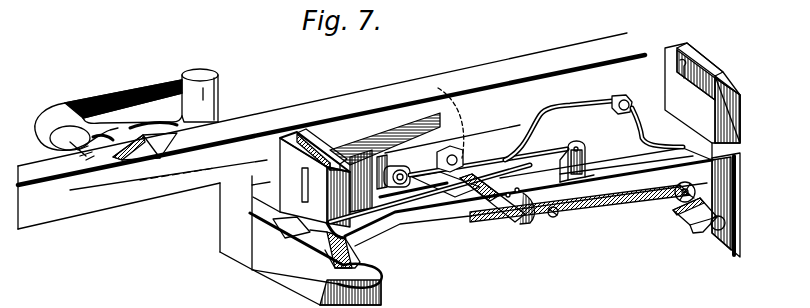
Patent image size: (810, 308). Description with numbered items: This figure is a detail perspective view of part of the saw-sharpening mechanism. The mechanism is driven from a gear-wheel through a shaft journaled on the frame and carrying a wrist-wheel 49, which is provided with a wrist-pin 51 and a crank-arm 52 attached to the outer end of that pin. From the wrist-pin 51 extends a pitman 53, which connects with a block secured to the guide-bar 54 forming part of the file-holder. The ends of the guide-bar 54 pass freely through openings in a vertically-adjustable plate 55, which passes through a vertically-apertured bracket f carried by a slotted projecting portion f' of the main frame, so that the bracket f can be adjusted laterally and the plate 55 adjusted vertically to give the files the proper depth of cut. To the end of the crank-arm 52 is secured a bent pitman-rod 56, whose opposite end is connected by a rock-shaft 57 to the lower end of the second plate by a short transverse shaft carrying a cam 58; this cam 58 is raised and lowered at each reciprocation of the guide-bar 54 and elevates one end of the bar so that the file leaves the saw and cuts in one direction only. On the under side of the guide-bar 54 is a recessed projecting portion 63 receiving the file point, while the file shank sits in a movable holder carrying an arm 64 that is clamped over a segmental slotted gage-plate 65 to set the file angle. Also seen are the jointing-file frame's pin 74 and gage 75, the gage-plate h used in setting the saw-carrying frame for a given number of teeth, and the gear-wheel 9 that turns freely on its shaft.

The gear-wheel 9 is at (331, 131).
The pin 74 is at (68, 150).
The gage 75 is at (150, 160).
The bracket f is at (272, 192).
The supporting part f' is at (301, 259).
The vertically-adjustable plate 55 is at (303, 136).
The crank-arm 52 is at (400, 166).
The wrist-pin 51 is at (447, 150).
The wrist-wheel 49 is at (455, 141).
The bent pitman-rod 56 is at (553, 113).
The rock-shaft 57 is at (636, 140).
The pitman 53 is at (572, 146).
The guide-bar 54 is at (430, 193).
The gage-plate h is at (528, 185).
The arm 64 is at (505, 212).
The segmental slotted gage-plate 65 is at (554, 218).
The recessed projecting portion 63 is at (676, 196).
The cam 58 is at (690, 228).